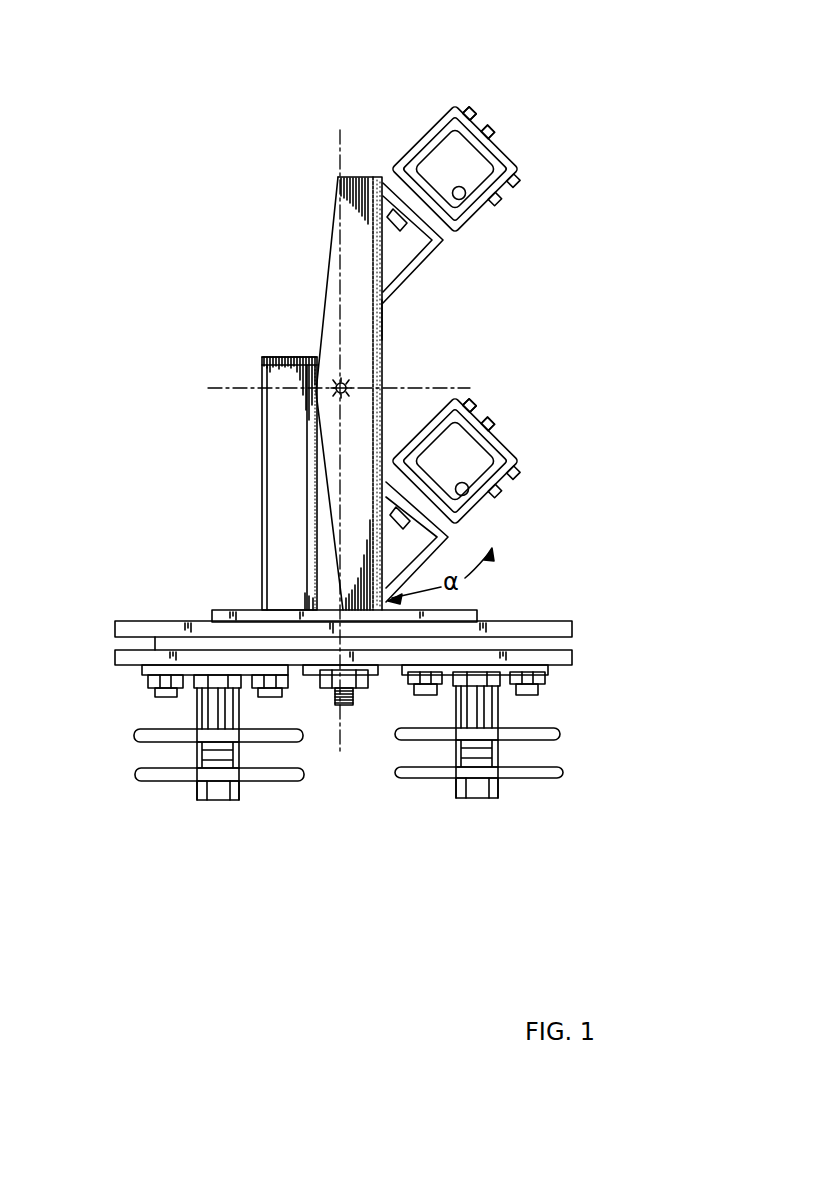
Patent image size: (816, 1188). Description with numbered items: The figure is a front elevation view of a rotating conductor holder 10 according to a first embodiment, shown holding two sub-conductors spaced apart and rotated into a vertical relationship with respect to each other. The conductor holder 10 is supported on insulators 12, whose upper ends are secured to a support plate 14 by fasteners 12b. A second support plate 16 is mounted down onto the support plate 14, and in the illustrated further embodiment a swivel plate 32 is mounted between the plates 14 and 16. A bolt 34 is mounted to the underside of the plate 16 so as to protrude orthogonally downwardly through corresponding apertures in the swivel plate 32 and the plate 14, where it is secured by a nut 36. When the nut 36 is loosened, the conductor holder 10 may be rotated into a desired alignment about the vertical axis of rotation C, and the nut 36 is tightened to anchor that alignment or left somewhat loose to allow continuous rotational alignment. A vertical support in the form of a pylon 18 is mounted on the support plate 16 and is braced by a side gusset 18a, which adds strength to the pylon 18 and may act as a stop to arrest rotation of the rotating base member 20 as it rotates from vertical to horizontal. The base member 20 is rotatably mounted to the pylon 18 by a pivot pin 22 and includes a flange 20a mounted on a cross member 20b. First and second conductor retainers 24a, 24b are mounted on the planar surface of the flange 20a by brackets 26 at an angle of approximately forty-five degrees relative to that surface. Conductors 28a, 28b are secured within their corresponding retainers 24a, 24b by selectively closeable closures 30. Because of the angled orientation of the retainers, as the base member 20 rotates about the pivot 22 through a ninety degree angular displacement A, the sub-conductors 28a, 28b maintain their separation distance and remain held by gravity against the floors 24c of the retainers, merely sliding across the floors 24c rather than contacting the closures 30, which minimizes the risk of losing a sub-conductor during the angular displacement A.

The rotating conductor holder 10 is at (597, 196).
The insulators 12 is at (302, 729).
The fasteners 12b is at (255, 692).
The support plate 14 is at (576, 651).
The support plate 16 is at (222, 610).
The pylon 18 is at (316, 527).
The side gusset 18a is at (272, 543).
The rotating base member 20 is at (364, 267).
The flange 20a is at (364, 221).
The cross member 20b is at (368, 320).
The pivot pin 22 is at (336, 389).
The first conductor retainer 24a is at (457, 106).
The second conductor retainer 24b is at (518, 463).
The floors 24c is at (432, 160).
The brackets 26 is at (410, 277).
The conductor 28a is at (462, 200).
The conductor 28b is at (466, 494).
The closures 30 is at (510, 156).
The swivel plate 32 is at (530, 641).
The bolt 34 is at (335, 702).
The nut 36 is at (370, 683).
The angular displacement A is at (306, 278).
The vertical axis of rotation C is at (338, 170).